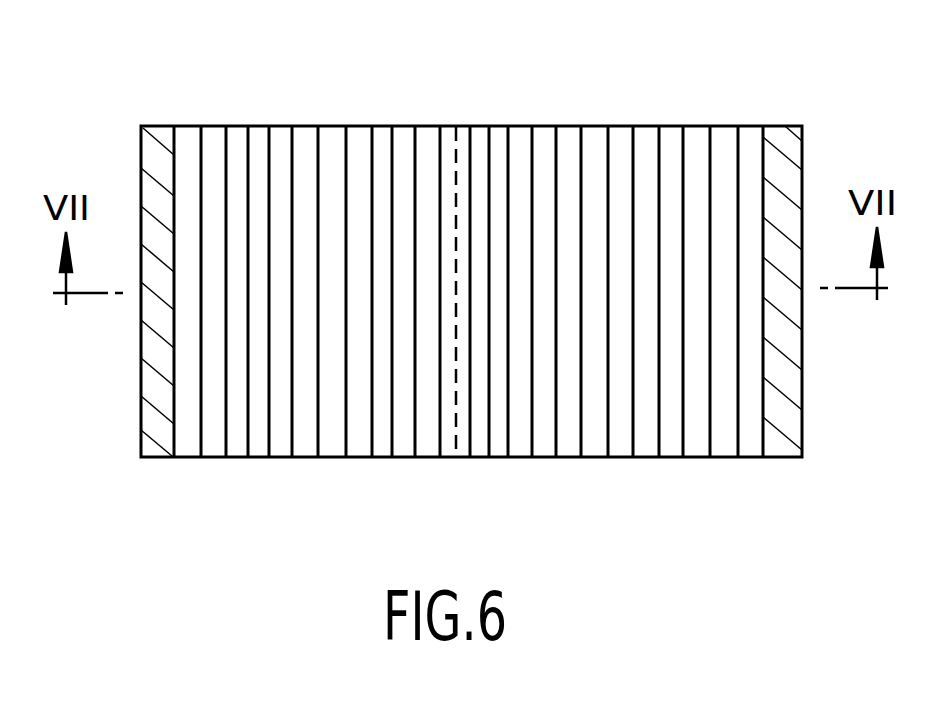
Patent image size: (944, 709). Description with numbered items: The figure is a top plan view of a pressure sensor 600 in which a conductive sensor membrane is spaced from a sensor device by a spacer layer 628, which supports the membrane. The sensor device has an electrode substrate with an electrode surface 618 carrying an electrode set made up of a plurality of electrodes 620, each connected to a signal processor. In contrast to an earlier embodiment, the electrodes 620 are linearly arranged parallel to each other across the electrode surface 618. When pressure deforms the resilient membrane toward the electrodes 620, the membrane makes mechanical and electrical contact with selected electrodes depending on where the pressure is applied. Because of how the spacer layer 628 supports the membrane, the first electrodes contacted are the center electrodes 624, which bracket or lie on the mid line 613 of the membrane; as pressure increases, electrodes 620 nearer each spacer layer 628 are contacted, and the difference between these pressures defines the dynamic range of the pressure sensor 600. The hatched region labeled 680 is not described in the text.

The pressure sensor 600 is at (632, 70).
The mid line 613 is at (456, 155).
The electrode surface 618 is at (260, 445).
The electrodes 620 is at (587, 439).
The center electrodes 624 is at (438, 127).
The spacer layer 628 is at (160, 433).
The end member 680 is at (767, 430).